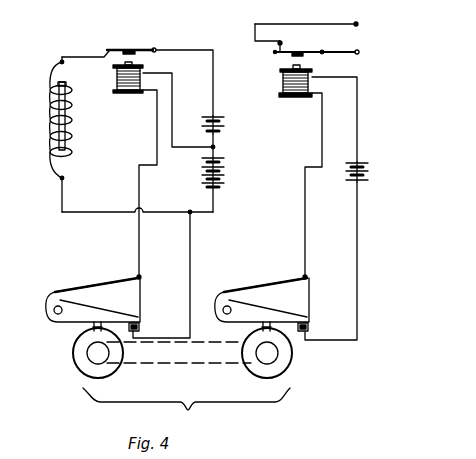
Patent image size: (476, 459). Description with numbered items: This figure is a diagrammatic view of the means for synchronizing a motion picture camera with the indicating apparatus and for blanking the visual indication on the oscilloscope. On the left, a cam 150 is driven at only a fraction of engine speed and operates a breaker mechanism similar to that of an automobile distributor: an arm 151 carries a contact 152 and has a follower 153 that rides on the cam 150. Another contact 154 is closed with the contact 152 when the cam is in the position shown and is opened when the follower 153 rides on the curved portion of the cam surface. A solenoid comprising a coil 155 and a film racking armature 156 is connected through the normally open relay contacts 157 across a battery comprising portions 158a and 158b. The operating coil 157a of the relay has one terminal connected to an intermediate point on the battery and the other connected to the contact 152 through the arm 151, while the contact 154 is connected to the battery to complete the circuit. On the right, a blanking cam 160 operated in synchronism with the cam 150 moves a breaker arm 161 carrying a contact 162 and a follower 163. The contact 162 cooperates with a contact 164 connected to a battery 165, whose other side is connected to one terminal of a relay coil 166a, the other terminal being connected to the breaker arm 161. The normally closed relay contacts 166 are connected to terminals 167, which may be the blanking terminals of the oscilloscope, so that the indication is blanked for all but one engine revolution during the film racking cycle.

The cam 150 is at (87, 365).
The arm 151 is at (103, 317).
The contact 152 is at (140, 320).
The follower 153 is at (94, 328).
The contact 154 is at (139, 328).
The coil 155 is at (52, 152).
The film racking armature 156 is at (64, 148).
The relay contacts 157 is at (114, 48).
The operating coil 157a is at (127, 84).
The battery portion 158a is at (222, 132).
The battery portion 158b is at (222, 187).
The cam 160 is at (278, 367).
The breaker arm 161 is at (268, 317).
The contact 162 is at (309, 320).
The follower 163 is at (263, 328).
The contact 164 is at (308, 329).
The battery 165 is at (367, 181).
The relay contacts 166 is at (275, 52).
The relay coil 166a is at (283, 87).
The terminals 167 is at (357, 25).